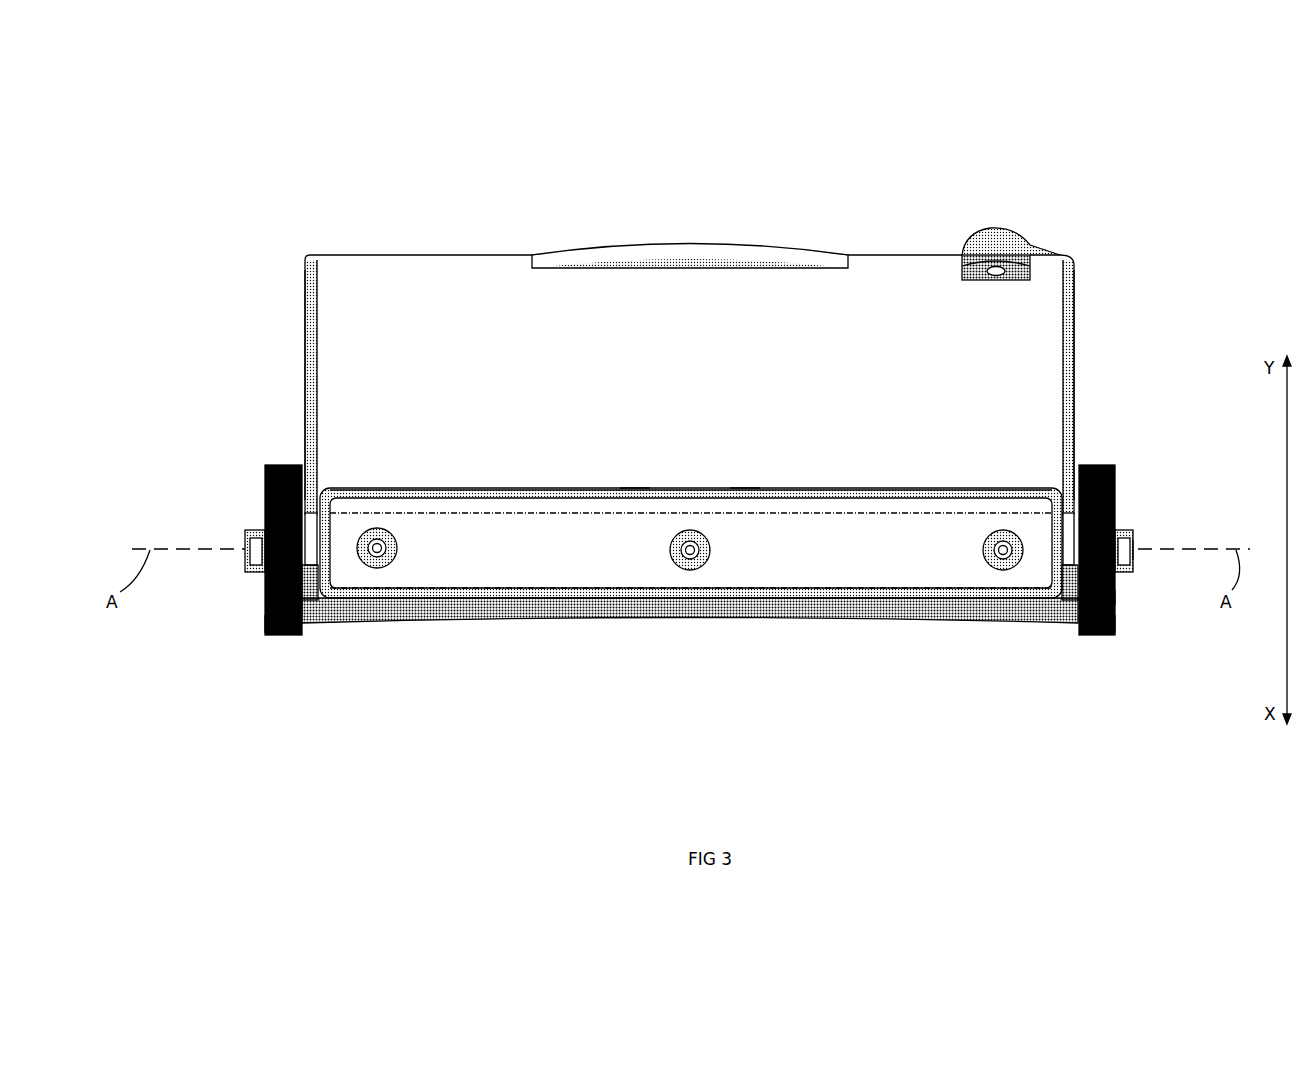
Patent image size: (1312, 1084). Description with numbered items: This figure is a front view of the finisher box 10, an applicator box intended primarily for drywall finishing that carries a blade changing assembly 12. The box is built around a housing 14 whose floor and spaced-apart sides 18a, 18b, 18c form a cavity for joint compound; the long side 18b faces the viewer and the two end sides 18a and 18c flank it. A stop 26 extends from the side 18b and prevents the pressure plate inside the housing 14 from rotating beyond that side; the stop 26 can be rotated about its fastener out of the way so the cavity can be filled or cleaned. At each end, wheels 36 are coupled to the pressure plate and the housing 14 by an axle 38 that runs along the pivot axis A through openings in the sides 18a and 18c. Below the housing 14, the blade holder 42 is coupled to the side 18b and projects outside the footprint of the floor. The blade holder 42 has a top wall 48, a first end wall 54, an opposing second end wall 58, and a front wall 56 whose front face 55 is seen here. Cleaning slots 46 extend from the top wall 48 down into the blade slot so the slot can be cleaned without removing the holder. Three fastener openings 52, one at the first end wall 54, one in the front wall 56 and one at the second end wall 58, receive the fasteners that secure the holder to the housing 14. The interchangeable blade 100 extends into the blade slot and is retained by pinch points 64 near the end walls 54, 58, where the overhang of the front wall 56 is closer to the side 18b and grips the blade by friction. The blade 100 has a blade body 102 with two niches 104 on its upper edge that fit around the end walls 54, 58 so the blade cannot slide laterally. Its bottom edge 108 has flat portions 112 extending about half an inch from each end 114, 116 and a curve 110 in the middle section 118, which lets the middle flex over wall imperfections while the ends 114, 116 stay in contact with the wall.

The finisher box 10 is at (1108, 160).
The blade changing assembly 12 is at (298, 660).
The housing 14 is at (1045, 312).
The side 18a is at (1080, 358).
The side 18b is at (898, 265).
The side 18c is at (305, 362).
The stop 26 is at (990, 232).
The wheels 36 is at (278, 465).
The axle 38 is at (1135, 538).
The blade holder 42 is at (887, 522).
The cleaning slots 46 is at (746, 488).
The top wall 48 is at (942, 490).
The fastener opening 52 is at (380, 545).
The first end wall 54 is at (265, 512).
The front face 55 is at (478, 548).
The front wall 56 is at (700, 520).
The second end wall 58 is at (1118, 500).
The pinch points 64 is at (265, 615).
The blade 100 is at (917, 623).
The blade body 102 is at (977, 623).
The niches 104 is at (1113, 598).
The bottom edge 108 is at (1043, 623).
The curve 110 is at (695, 622).
The flat portions 112 is at (388, 623).
The end 114 is at (318, 623).
The end 116 is at (1068, 623).
The middle section 118 is at (718, 623).